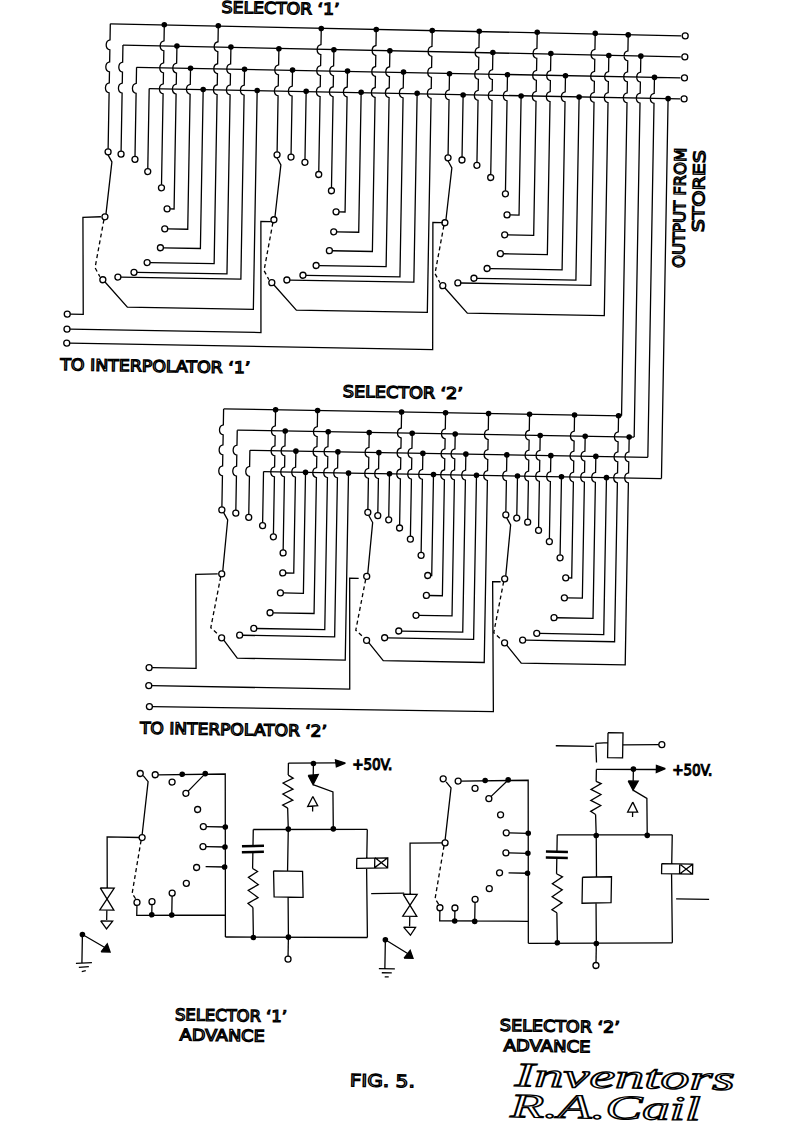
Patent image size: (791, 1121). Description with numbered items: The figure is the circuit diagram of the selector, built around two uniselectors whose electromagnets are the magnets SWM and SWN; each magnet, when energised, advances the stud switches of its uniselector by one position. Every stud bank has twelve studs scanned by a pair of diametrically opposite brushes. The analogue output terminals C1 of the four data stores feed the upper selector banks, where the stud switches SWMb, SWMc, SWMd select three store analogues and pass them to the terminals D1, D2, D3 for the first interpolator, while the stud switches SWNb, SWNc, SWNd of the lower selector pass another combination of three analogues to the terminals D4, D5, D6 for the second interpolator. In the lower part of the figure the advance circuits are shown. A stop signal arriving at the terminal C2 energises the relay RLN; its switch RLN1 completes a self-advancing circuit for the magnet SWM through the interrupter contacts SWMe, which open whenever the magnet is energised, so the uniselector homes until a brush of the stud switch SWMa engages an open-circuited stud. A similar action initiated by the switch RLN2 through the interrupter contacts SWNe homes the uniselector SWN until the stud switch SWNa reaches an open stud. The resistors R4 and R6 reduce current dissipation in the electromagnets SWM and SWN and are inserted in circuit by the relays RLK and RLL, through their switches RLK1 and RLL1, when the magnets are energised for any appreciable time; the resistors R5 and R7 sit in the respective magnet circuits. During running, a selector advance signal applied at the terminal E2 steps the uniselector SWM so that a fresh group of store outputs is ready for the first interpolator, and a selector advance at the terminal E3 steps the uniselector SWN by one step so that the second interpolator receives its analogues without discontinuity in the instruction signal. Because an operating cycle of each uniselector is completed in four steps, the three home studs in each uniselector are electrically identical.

The stud switch SWMb is at (176, 167).
The stud switch SWMc is at (347, 170).
The stud switch SWMd is at (521, 173).
The stud switch SWNb is at (279, 534).
The stud switch SWNc is at (421, 536).
The stud switch SWNd is at (561, 539).
The analogue output terminal C1 is at (413, 249).
The selector output terminal D1 is at (70, 270).
The selector output terminal D2 is at (155, 280).
The selector output terminal D3 is at (241, 288).
The selector output terminal D4 is at (169, 626).
The selector output terminal D5 is at (240, 637).
The selector output terminal D6 is at (310, 649).
The stud switch SWMa is at (179, 853).
The interrupter contacts SWMe is at (92, 883).
The relay switch RLN1 is at (119, 953).
The resistor R4 is at (276, 796).
The relay switch RLK1 is at (343, 796).
The resistor R5 is at (246, 883).
The uniselector electromagnet SWM is at (306, 883).
The selector advance terminal E2 is at (289, 960).
The relay winding RLK is at (380, 883).
The stud switch SWNa is at (482, 860).
The interrupter contacts SWNe is at (394, 888).
The relay switch RLN2 is at (422, 959).
The resistor R6 is at (584, 802).
The relay switch RLL1 is at (660, 802).
The resistor R7 is at (550, 888).
The uniselector electromagnet SWN is at (614, 889).
The selector advance terminal E3 is at (597, 966).
The relay winding RLL is at (685, 889).
The relay winding RLN is at (617, 739).
The stop signal terminal C2 is at (657, 746).